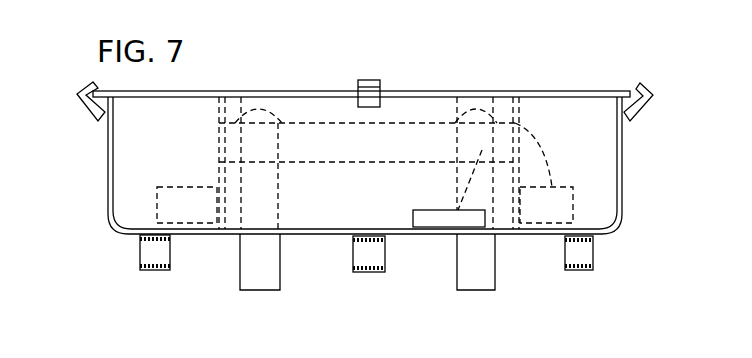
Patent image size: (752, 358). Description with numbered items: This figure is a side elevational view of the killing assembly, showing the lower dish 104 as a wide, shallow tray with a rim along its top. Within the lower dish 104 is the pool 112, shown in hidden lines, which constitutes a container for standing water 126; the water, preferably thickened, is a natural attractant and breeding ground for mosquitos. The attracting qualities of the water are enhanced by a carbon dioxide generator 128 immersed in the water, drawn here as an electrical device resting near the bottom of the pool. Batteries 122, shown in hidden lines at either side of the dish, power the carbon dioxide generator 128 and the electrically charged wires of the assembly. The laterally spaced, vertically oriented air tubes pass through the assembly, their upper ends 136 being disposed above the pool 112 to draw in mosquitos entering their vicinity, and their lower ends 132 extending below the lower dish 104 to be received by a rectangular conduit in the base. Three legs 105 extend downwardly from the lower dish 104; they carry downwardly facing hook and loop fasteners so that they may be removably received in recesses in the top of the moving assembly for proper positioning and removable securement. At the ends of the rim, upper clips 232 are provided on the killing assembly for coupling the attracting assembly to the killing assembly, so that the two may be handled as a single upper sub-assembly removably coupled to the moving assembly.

The lower dish 104 is at (198, 138).
The legs 105 is at (343, 284).
The pool 112 is at (409, 141).
The batteries 122 is at (210, 214).
The standing water 126 is at (369, 80).
The carbon dioxide generator 128 is at (435, 215).
The lower ends 132 is at (337, 275).
The upper ends 136 is at (397, 78).
The upper clips 232 is at (373, 93).